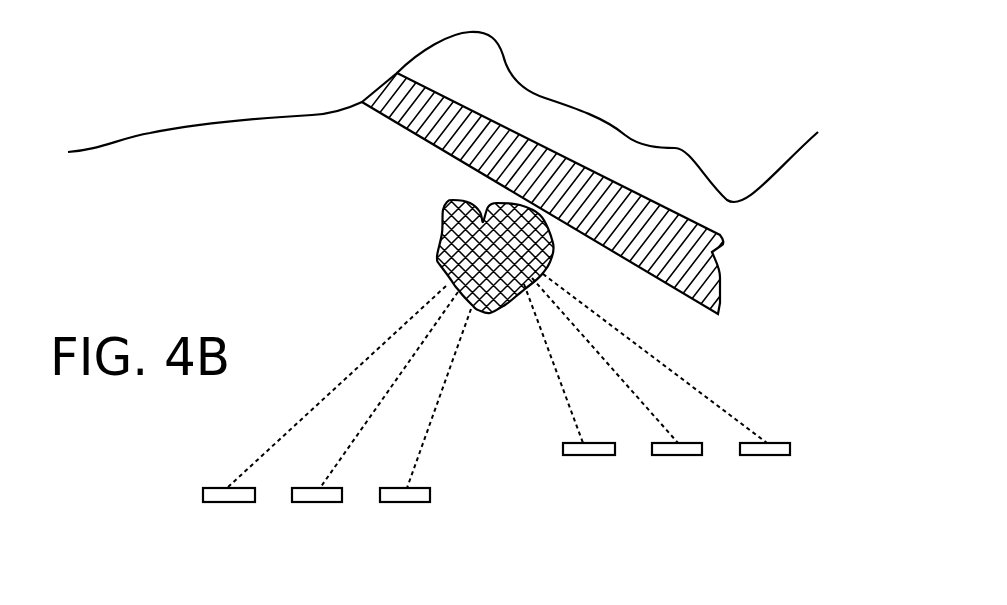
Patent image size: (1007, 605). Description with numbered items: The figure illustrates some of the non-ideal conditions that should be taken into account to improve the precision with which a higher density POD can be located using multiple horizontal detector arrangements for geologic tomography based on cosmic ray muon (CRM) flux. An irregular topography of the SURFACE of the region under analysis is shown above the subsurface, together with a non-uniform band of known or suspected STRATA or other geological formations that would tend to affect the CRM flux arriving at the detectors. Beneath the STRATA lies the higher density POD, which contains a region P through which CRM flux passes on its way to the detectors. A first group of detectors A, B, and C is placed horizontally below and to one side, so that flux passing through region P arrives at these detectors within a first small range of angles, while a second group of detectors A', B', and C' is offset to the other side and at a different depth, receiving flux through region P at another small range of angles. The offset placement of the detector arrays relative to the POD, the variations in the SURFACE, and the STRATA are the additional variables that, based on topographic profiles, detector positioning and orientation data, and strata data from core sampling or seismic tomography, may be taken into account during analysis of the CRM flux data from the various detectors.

The surface SURFACE is at (312, 113).
The strata STRATA is at (635, 182).
The higher density pod POD is at (452, 220).
The region in the pod P is at (498, 240).
The detector A is at (214, 524).
The detector B is at (302, 524).
The detector C is at (389, 524).
The detector A' is at (572, 475).
The detector B' is at (659, 475).
The detector C' is at (746, 475).